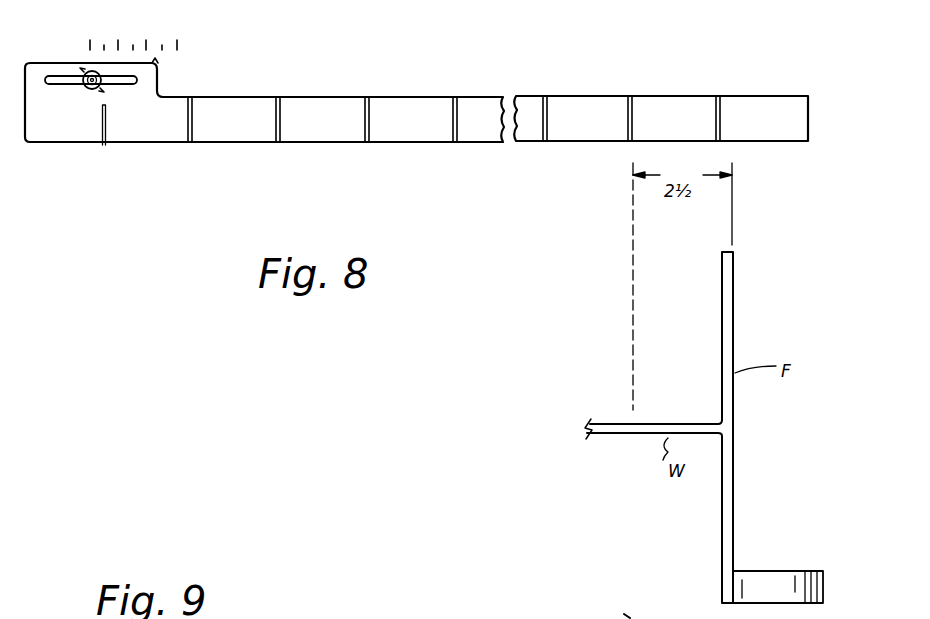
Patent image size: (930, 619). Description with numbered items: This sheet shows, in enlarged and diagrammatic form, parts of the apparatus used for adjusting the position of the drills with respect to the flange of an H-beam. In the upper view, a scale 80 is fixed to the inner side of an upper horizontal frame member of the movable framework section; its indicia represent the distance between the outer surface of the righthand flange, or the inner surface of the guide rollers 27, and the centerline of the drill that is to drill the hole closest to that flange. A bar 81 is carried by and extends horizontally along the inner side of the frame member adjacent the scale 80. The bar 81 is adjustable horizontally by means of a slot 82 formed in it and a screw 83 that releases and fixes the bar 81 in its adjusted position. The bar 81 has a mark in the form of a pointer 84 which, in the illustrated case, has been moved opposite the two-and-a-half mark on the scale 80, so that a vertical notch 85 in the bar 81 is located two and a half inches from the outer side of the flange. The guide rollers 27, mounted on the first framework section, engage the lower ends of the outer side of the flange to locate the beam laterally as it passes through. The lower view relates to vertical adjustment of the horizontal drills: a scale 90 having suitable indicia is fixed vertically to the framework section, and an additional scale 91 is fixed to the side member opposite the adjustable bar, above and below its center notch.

In FIG. 8, the scale 80 is at (180, 44).
In FIG. 8, the bar 81 is at (340, 97).
In FIG. 8, the slot 82 is at (124, 87).
In FIG. 8, the screw 83 is at (89, 90).
In FIG. 8, the pointer 84 is at (160, 62).
In FIG. 8, the vertical notch 85 is at (627, 118).
In FIG. 8, the guide rollers 27 is at (766, 582).
In FIG. 9, the scale 90 is at (605, 618).
In FIG. 9, the additional scale 91 is at (365, 618).